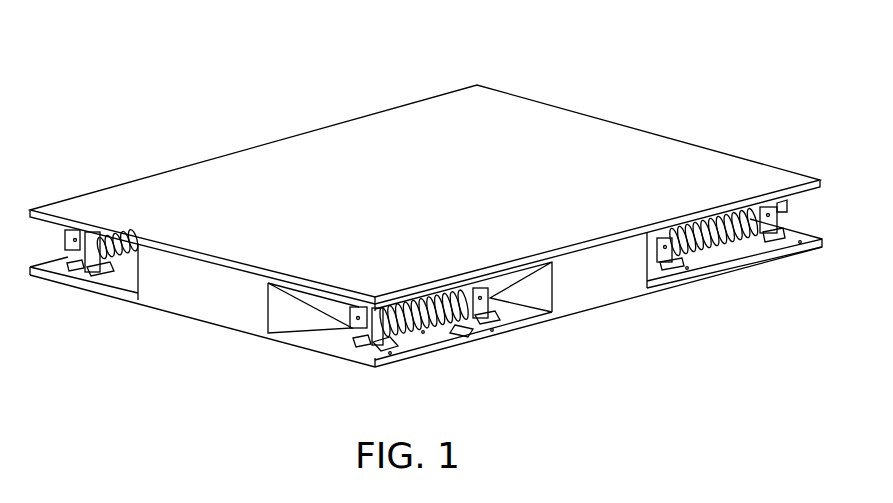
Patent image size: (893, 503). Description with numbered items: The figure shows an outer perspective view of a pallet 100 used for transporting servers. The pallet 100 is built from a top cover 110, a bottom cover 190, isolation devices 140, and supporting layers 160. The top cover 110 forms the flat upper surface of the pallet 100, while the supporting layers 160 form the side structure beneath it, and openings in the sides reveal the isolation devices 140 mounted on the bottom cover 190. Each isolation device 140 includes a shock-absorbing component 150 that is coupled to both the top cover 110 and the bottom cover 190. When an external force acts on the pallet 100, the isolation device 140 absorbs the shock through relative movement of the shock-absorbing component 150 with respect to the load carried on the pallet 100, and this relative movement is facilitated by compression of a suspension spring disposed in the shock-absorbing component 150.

The pallet 100 is at (426, 209).
The top cover 110 is at (652, 162).
The isolation device 140 is at (486, 338).
The shock-absorbing component 150 is at (418, 336).
The supporting layer 160 is at (202, 288).
The bottom cover 190 is at (750, 263).